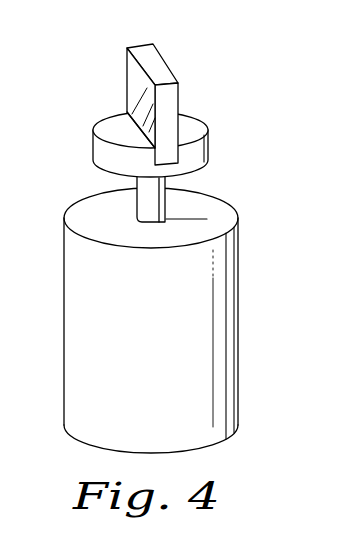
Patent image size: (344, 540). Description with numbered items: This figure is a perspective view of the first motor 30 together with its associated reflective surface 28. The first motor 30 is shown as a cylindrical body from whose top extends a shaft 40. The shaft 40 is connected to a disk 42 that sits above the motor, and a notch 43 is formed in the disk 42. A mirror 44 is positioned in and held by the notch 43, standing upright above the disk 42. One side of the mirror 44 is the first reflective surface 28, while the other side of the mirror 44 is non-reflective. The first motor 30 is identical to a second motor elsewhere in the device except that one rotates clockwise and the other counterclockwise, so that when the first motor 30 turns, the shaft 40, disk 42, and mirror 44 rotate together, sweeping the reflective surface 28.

The first reflective surface 28 is at (135, 82).
The first motor 30 is at (240, 286).
The shaft 40 is at (136, 200).
The disk 42 is at (94, 145).
The notch 43 is at (186, 158).
The mirror 44 is at (153, 96).